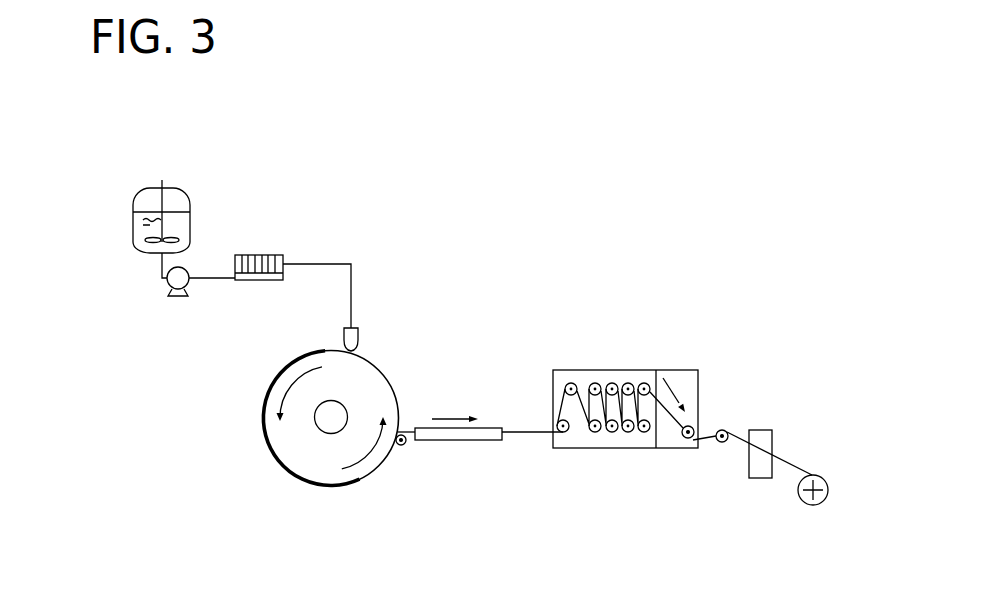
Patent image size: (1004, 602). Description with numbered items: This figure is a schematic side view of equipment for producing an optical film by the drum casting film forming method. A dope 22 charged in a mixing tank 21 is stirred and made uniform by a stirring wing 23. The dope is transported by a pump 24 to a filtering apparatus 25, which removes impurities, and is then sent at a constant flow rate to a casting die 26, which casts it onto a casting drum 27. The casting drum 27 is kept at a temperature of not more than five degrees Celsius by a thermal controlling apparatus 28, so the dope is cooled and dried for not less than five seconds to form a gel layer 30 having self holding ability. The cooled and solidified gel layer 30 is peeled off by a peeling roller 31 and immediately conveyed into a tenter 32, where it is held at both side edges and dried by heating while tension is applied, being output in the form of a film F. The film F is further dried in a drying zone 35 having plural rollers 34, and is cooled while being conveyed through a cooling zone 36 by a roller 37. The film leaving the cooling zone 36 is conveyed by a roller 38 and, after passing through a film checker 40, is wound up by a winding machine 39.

The mixing tank 21 is at (148, 187).
The dope 22 is at (178, 221).
The stirring wing 23 is at (146, 251).
The pump 24 is at (179, 297).
The filtering apparatus 25 is at (267, 255).
The casting die 26 is at (343, 335).
The casting drum 27 is at (377, 382).
The thermal controlling apparatus 28 is at (331, 421).
The gel layer 30 is at (246, 416).
The peeling roller 31 is at (405, 446).
The tenter 32 is at (489, 427).
The film F is at (530, 435).
The rollers 34 is at (612, 383).
The drying zone 35 is at (595, 450).
The cooling zone 36 is at (667, 450).
The roller 37 is at (695, 420).
The roller 38 is at (723, 443).
The winding machine 39 is at (813, 505).
The film checker 40 is at (759, 480).